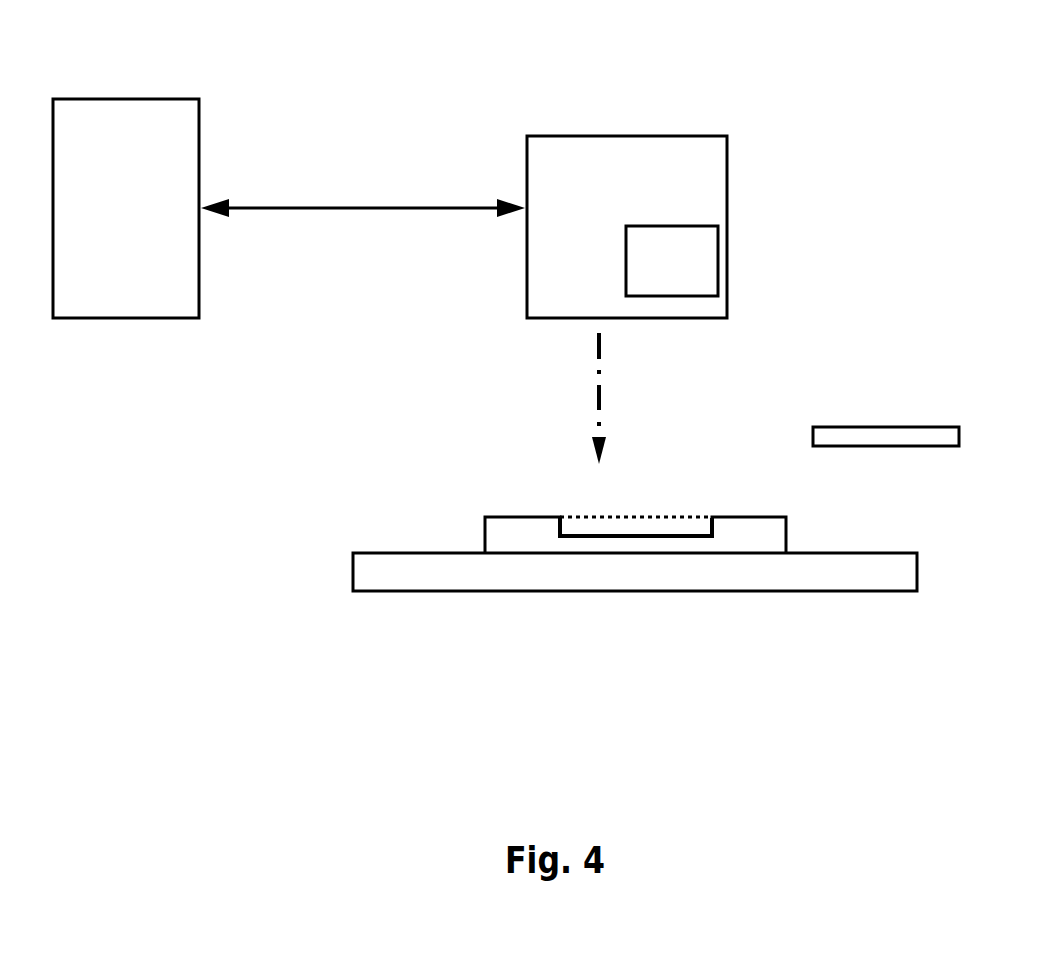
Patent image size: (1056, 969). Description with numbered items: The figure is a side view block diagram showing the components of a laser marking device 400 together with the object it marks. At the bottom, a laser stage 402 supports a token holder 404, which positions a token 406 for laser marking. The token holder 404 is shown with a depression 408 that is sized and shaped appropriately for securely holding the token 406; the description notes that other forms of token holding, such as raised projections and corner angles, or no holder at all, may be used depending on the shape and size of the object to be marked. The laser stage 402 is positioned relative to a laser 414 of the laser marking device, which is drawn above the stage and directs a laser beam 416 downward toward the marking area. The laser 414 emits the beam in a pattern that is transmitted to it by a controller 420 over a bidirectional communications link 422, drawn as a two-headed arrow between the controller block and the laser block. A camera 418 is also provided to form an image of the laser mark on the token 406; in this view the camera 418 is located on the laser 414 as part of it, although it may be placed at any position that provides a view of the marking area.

The laser marking device 400 is at (848, 70).
The laser stage 402 is at (635, 572).
The token holder 404 is at (800, 526).
The token 406 is at (948, 414).
The depression 408 is at (560, 502).
The laser 414 is at (627, 227).
The laser beam 416 is at (576, 398).
The camera 418 is at (672, 261).
The controller 420 is at (126, 208).
The bidirectional communications link 422 is at (363, 198).